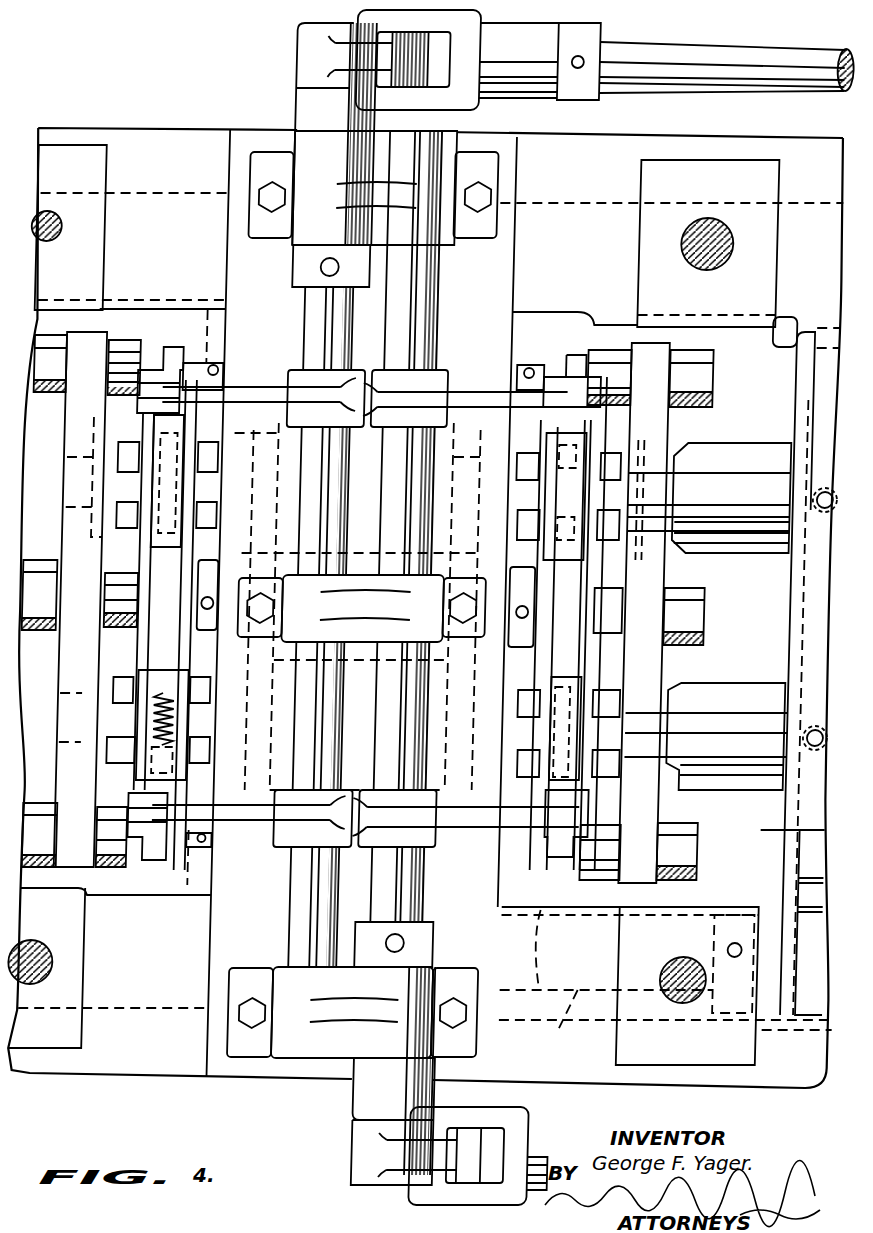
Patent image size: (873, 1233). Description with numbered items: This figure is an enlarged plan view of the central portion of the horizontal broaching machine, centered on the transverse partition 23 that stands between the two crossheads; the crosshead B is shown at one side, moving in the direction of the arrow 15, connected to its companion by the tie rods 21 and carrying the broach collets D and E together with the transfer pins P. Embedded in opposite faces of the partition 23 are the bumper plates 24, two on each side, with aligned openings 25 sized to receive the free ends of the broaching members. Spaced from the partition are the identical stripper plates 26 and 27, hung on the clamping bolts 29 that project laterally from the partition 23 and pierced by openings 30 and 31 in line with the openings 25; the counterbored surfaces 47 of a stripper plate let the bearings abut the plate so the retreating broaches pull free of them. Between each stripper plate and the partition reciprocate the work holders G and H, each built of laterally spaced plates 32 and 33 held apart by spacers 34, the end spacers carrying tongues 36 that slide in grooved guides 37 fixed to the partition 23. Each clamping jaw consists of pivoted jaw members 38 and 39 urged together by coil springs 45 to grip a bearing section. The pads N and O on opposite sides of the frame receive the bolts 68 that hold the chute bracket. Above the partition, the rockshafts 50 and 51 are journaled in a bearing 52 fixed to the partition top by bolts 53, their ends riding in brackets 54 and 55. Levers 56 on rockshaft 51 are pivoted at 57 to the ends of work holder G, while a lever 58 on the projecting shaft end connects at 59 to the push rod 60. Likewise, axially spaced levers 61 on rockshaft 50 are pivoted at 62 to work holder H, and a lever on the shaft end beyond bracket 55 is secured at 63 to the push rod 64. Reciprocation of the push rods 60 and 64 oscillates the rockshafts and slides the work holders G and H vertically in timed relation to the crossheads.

The arrow 15 is at (738, 688).
The tie rods 21 is at (556, 985).
The partition 23 is at (508, 142).
The bumper plates 24 is at (256, 412).
The openings 25 is at (226, 466).
The stripper plate 26 is at (94, 335).
The stripper plate 27 is at (644, 345).
The clamping bolts 29 is at (34, 335).
The openings 30 is at (75, 448).
The openings 31 is at (650, 470).
The plate 32 is at (150, 630).
The plate 33 is at (200, 670).
The spacers 34 is at (160, 625).
The tongues 36 is at (158, 350).
The guides 37 is at (165, 325).
The jaw member 38 is at (115, 690).
The jaw member 39 is at (112, 760).
The coil springs 45 is at (172, 500).
The counterbored surfaces 47 is at (82, 567).
The rockshaft 50 is at (428, 905).
The rockshaft 51 is at (302, 906).
The bearing 52 is at (432, 640).
The bolts 53 is at (258, 602).
The bracket 54 is at (300, 140).
The bracket 55 is at (450, 1082).
The levers 56 is at (236, 390).
The pivotal connection 57 is at (220, 338).
The lever 58 is at (300, 46).
The connection 59 is at (514, 34).
The push rod 60 is at (640, 50).
The levers 61 is at (478, 395).
The pivotal connection 62 is at (378, 1175).
The connection 63 is at (505, 1165).
The push rod 64 is at (556, 1157).
The bolts 68 is at (48, 232).
The crosshead B is at (798, 673).
The broach collet D is at (722, 695).
The broach collet E is at (730, 548).
The work holder G is at (176, 690).
The work holder H is at (567, 745).
The pad N is at (62, 1050).
The pad O is at (85, 150).
The pins P is at (725, 470).